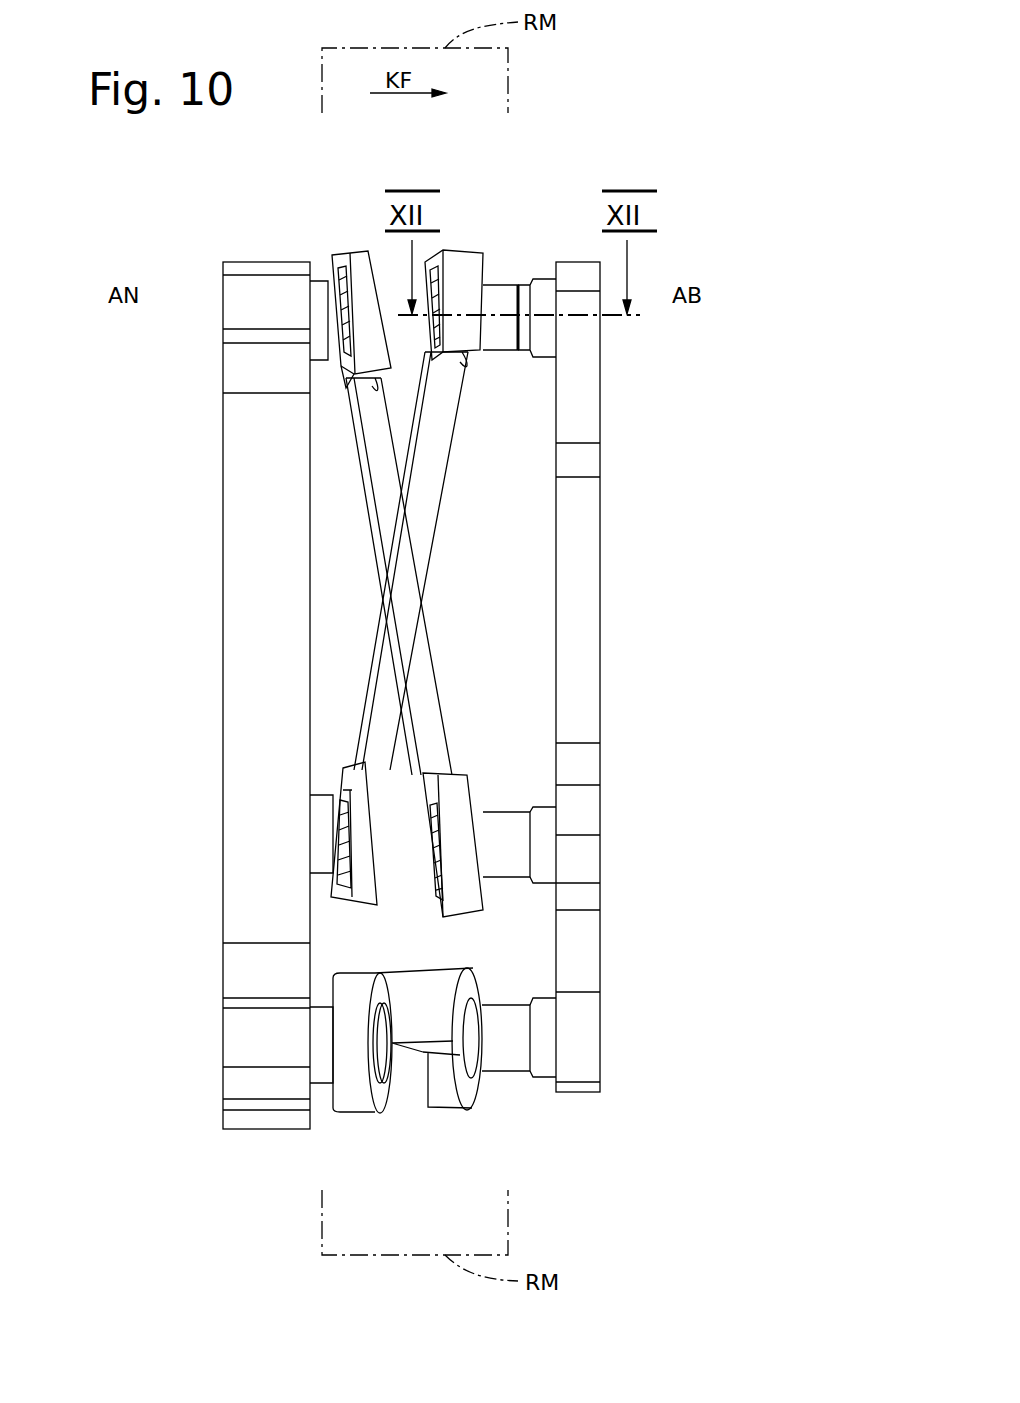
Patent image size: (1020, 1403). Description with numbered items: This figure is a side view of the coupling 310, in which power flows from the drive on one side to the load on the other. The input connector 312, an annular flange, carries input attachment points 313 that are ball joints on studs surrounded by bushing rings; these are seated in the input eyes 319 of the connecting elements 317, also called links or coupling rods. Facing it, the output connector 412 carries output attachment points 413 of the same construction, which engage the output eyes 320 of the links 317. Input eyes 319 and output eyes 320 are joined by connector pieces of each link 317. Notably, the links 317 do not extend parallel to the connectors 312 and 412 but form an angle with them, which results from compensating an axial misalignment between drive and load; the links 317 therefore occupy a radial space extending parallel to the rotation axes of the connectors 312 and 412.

The coupling 310 is at (674, 108).
The input connector 312 is at (212, 693).
The input attachment points 313 is at (320, 300).
The connecting elements 317 is at (448, 486).
The input eyes 319 is at (368, 253).
The output eyes 320 is at (462, 253).
The output connector 412 is at (610, 678).
The output attachment points 413 is at (507, 302).